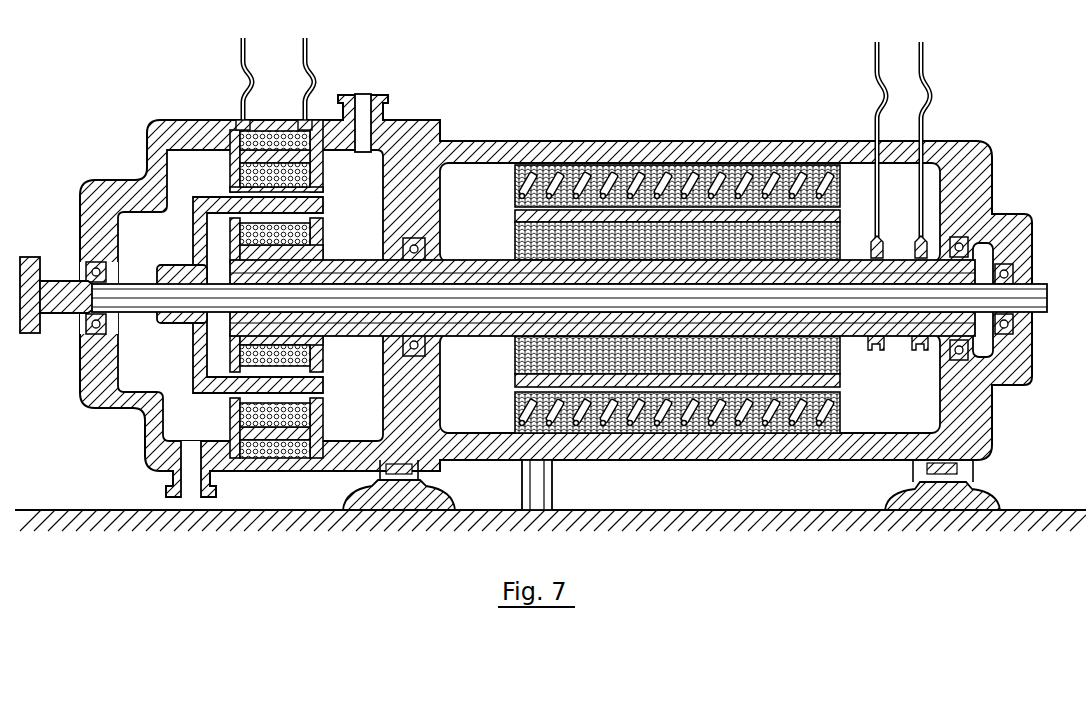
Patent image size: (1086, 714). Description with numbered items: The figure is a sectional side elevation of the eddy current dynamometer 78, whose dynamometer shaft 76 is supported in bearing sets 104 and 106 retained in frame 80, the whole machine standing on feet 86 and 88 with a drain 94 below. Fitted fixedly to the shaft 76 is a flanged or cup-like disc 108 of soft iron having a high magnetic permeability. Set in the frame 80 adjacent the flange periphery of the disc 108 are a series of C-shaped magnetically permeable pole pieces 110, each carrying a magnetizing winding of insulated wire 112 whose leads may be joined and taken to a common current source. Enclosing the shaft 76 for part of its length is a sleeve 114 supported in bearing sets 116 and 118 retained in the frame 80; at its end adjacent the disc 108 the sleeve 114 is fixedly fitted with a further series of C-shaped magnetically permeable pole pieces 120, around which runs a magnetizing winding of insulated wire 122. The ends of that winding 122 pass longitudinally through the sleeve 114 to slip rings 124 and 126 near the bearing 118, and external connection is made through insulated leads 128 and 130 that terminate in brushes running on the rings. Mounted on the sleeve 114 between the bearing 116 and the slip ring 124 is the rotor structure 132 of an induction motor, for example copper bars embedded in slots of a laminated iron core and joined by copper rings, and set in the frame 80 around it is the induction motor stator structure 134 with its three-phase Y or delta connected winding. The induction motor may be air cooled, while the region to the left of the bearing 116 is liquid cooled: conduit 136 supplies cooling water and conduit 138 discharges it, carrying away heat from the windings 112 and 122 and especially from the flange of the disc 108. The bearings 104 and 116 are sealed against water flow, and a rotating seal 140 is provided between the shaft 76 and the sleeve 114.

The dynamometer shaft 76 is at (60, 285).
The canned motor pump 78 is at (660, 82).
The frame 80 is at (636, 141).
The mounting foot 86 is at (352, 500).
The mounting foot 88 is at (986, 496).
The drain conduit 94 is at (552, 480).
The bearing set 104 is at (92, 320).
The bearing set 106 is at (1015, 275).
The flanged or cup-like disc 108 is at (193, 236).
The C-shaped magnetically permeable pole pieces 110 is at (230, 176).
The magnetizing winding of insulated wire 112 is at (240, 50).
The sleeve 114 is at (490, 336).
The bearing set 116 is at (403, 346).
The bearing set 118 is at (950, 350).
The C-shaped magnetically permeable pole pieces 120 is at (318, 340).
The magnetizing winding of insulated wire 122 is at (300, 225).
The slip ring 124 is at (875, 350).
The slip ring 126 is at (905, 350).
The insulated lead 128 is at (873, 53).
The insulated lead 130 is at (925, 58).
The rotor structure 132 is at (515, 226).
The induction motor stator structure 134 is at (520, 394).
The conduit 136 is at (386, 104).
The conduit 138 is at (212, 482).
The rotating seal 140 is at (232, 284).